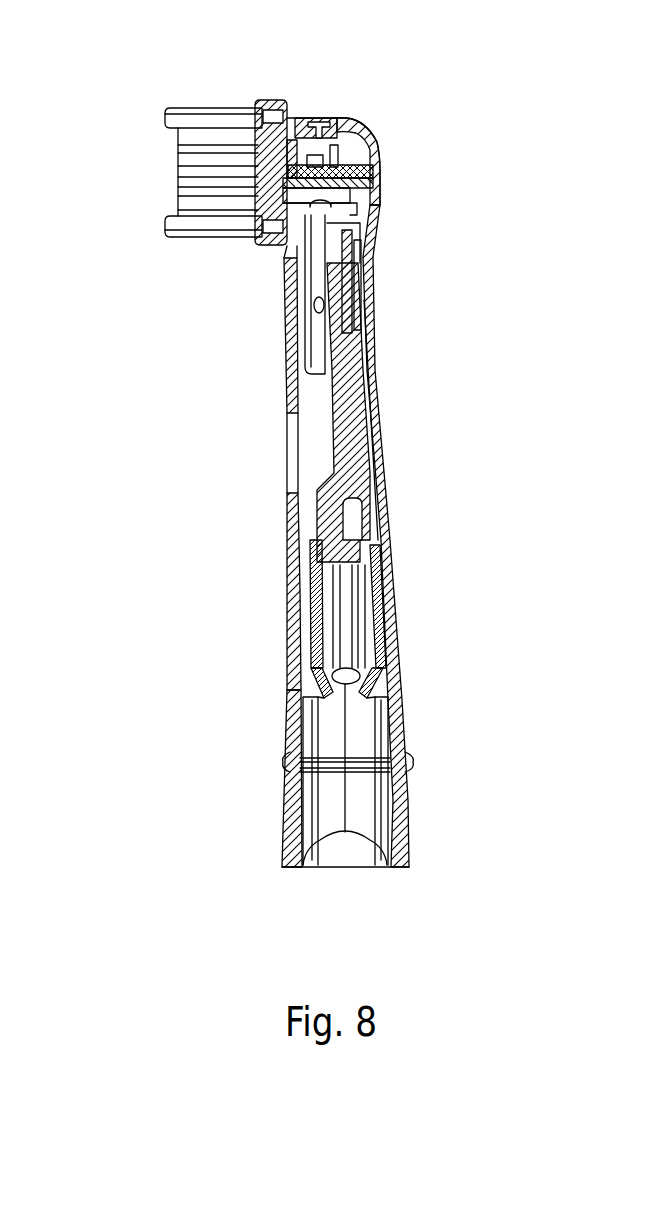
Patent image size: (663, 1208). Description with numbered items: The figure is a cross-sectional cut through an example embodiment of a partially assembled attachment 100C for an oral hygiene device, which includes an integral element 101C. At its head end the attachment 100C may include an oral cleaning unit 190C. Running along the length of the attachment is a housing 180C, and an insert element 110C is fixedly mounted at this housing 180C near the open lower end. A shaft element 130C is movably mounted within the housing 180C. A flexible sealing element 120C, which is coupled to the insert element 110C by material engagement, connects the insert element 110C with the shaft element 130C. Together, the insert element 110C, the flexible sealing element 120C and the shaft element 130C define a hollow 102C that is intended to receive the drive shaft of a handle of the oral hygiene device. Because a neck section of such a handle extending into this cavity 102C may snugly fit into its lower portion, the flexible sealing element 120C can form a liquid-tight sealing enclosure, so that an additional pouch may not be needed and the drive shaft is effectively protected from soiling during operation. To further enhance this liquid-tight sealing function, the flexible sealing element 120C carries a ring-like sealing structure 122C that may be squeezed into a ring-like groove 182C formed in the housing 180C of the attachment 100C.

The attachment 100C is at (143, 59).
The oral cleaning unit 190C is at (151, 241).
The shaft element 130C is at (362, 405).
The housing 180C is at (399, 612).
The integral element 101C is at (299, 531).
The ring-like groove 182C is at (292, 741).
The flexible sealing element 120C is at (396, 692).
The ring-like sealing structure 122C is at (394, 735).
The insert element 110C is at (399, 826).
The hollow 102C is at (345, 888).